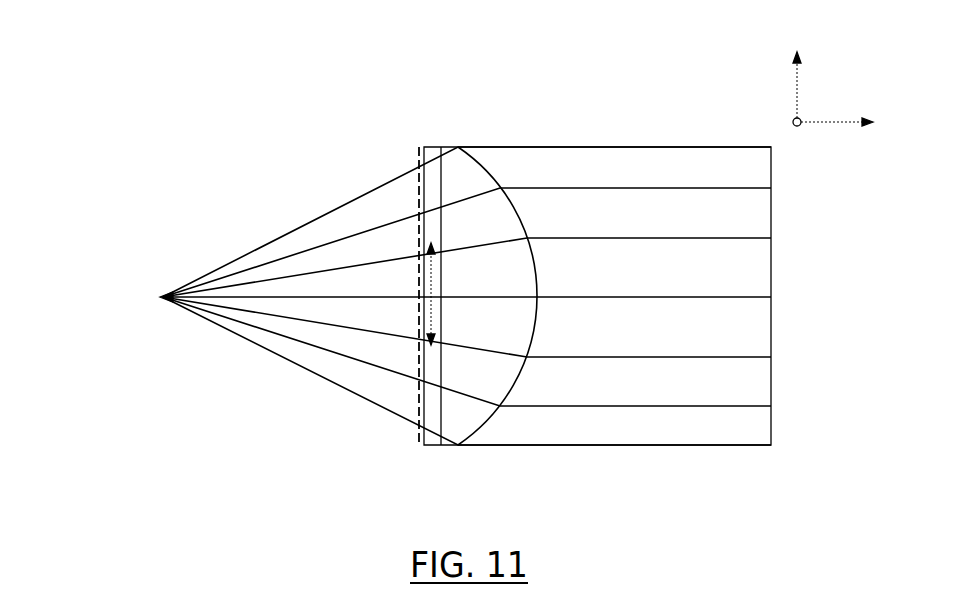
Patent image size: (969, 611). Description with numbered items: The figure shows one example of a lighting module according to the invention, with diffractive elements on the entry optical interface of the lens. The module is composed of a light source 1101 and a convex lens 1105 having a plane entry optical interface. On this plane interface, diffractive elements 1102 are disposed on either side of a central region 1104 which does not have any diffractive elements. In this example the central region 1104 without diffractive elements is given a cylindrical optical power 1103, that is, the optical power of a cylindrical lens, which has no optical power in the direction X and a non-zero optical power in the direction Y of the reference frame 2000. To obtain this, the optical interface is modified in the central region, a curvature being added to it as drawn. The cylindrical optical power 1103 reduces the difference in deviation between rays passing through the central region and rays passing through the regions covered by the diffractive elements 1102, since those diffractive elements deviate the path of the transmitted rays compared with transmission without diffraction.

The light source 1101 is at (163, 296).
The diffractive elements 1102 is at (423, 145).
The cylindrical optical power 1103 is at (417, 272).
The central region 1104 is at (467, 294).
The convex lens 1105 is at (437, 447).
The reference frame 2000 is at (772, 77).